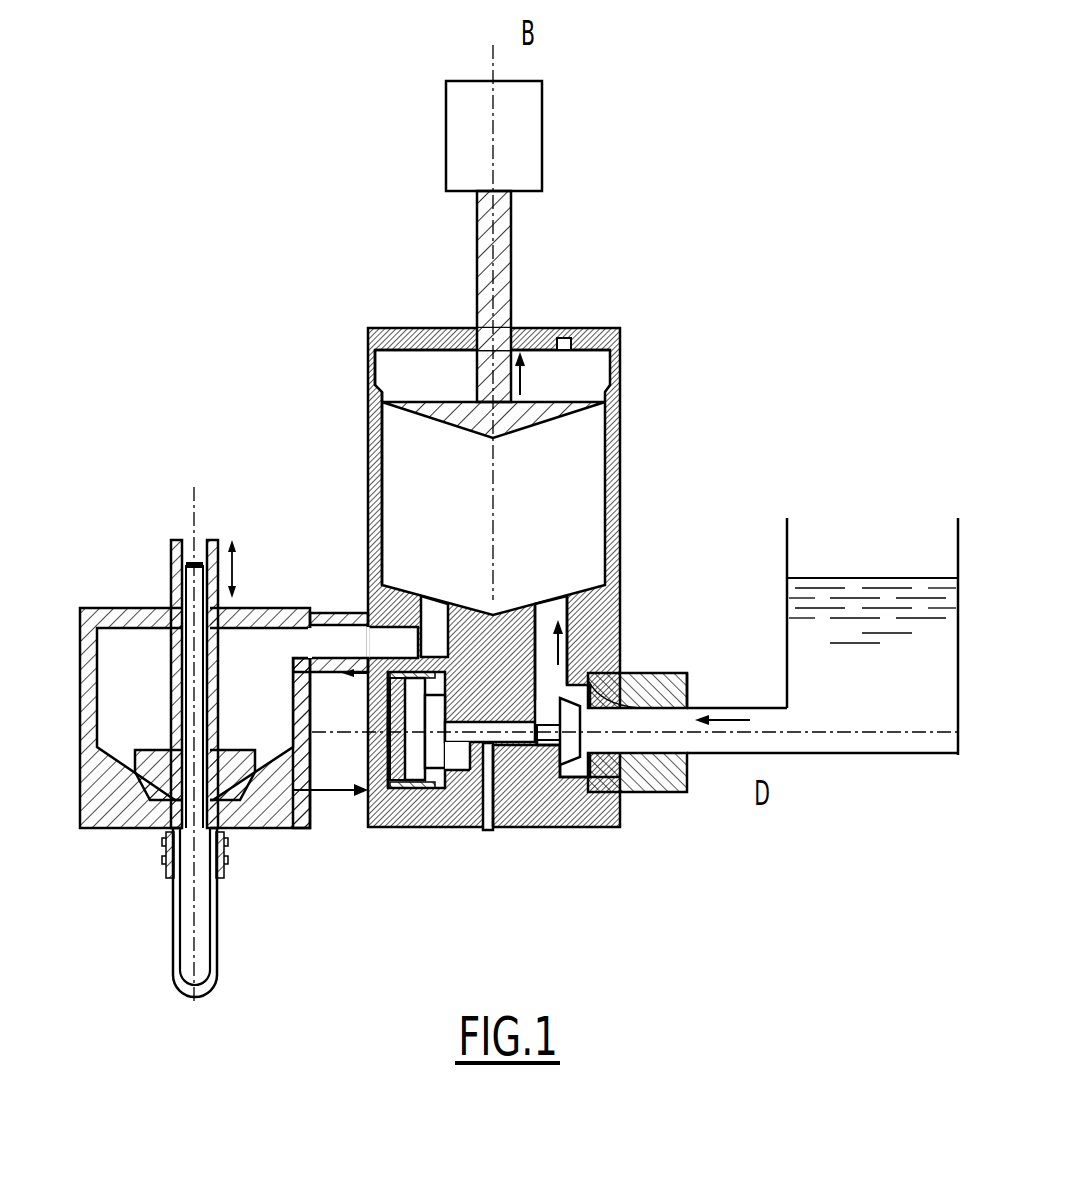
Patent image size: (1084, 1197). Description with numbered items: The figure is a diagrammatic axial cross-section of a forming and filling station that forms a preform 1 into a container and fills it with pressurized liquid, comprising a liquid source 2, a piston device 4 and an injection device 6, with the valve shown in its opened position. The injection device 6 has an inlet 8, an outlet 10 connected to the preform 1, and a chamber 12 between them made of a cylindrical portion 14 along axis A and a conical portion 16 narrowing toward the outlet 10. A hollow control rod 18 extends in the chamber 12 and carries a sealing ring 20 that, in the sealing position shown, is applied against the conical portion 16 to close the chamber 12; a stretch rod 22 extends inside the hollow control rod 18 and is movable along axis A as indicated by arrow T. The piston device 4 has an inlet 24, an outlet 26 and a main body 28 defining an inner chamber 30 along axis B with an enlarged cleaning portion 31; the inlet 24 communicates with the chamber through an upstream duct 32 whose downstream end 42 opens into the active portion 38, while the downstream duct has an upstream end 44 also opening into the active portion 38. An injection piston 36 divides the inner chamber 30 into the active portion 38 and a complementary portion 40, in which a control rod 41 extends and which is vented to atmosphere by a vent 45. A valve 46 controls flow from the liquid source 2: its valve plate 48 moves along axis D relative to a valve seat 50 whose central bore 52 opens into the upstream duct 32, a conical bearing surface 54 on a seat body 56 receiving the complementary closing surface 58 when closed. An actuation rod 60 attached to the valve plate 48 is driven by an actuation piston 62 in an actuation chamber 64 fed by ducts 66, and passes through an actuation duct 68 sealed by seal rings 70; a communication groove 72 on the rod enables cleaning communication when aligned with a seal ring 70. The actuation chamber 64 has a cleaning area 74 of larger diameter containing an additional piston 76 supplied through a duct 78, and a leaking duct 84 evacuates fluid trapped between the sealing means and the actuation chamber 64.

The preform 1 is at (217, 940).
The liquid source 2 is at (852, 565).
The piston device 4 is at (592, 203).
The injection device 6 is at (174, 703).
The inlet 8 is at (305, 640).
The outlet 10 is at (224, 850).
The chamber 12 is at (360, 708).
The cylindrical portion 14 is at (115, 690).
The conical portion 16 is at (275, 800).
The hollow control rod 18 is at (222, 598).
The sealing ring 20 is at (135, 795).
The stretch rod 22 is at (188, 592).
The inlet 24 is at (665, 752).
The outlet 26 is at (372, 617).
The main body 28 is at (620, 512).
The inner chamber 30 is at (400, 440).
The cleaning portion 31 is at (376, 362).
The upstream duct 32 is at (574, 645).
The injection piston 36 is at (570, 412).
The active portion 38 is at (562, 470).
The complementary portion 40 is at (585, 375).
The control rod 41 is at (488, 268).
The downstream end 42 is at (566, 625).
The upstream end 44 is at (434, 610).
The vent 45 is at (564, 336).
The valve 46 is at (593, 790).
The valve plate 48 is at (620, 786).
The valve seat 50 is at (640, 676).
The central bore 52 is at (638, 790).
The bearing surface 54 is at (628, 686).
The seat body 56 is at (690, 700).
The closing surface 58 is at (580, 728).
The actuation rod 60 is at (428, 790).
The actuation piston 62 is at (440, 790).
The actuation chamber 64 is at (474, 790).
The ducts 66 is at (395, 672).
The actuation duct 68 is at (516, 760).
The seal ring 70 is at (500, 630).
The communication groove 72 is at (527, 630).
The cleaning area 74 is at (403, 790).
The additional piston 76 is at (386, 700).
The duct 78 is at (384, 722).
The leaking duct 84 is at (492, 795).